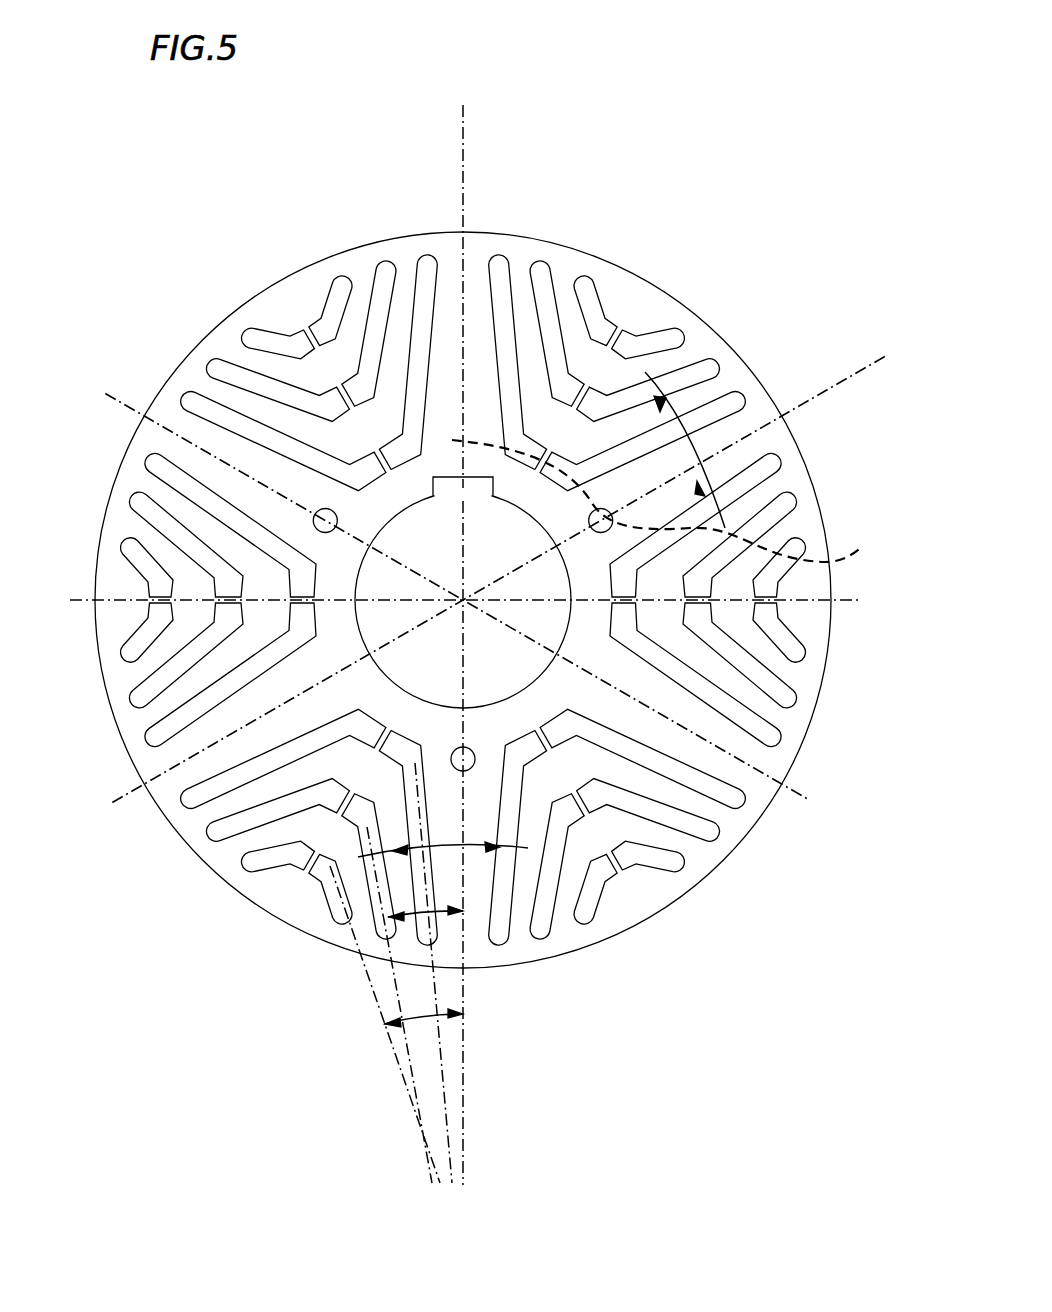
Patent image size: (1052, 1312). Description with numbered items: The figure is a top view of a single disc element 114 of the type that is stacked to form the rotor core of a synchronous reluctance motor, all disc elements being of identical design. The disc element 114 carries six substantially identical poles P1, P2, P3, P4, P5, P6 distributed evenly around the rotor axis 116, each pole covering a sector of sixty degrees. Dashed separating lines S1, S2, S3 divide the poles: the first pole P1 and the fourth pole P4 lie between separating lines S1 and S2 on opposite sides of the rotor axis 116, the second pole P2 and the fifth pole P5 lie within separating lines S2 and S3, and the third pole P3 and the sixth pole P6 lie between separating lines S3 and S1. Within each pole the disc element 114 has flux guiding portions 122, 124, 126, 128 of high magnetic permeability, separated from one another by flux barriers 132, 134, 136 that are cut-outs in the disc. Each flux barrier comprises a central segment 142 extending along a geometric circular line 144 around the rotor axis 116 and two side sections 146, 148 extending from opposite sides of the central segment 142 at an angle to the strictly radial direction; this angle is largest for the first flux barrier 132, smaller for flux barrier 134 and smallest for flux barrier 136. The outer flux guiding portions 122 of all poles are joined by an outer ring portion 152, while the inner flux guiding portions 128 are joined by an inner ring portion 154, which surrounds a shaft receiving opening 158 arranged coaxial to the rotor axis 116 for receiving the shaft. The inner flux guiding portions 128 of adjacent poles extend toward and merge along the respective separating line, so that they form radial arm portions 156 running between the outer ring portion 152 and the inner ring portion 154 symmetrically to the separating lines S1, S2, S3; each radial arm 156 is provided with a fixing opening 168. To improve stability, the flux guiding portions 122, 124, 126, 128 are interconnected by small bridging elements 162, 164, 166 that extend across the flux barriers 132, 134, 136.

The disc element 114 is at (800, 421).
The rotor axis 116 is at (463, 600).
The outer flux guiding portion 122 is at (625, 303).
The flux guiding portion 124 is at (587, 367).
The flux guiding portion 126 is at (498, 443).
The inner flux guiding portion 128 is at (527, 483).
The first flux barrier 132 is at (653, 333).
The flux barrier 134 is at (667, 387).
The flux barrier 136 is at (687, 423).
The central segment 142 is at (524, 455).
The geometric circular line 144 is at (850, 549).
The side section 146 is at (503, 408).
The side section 148 is at (740, 405).
The outer ring portion 152 is at (750, 815).
The inner ring portion 154 is at (377, 510).
The radial arm portion 156 is at (673, 710).
The shaft receiving opening 158 is at (410, 700).
The bridging element 162 is at (620, 863).
The bridging element 164 is at (580, 795).
The bridging element 166 is at (580, 725).
The fixing opening 168 is at (328, 517).
The separating line S1 is at (463, 132).
The separating line S2 is at (870, 356).
The separating line S3 is at (815, 800).
The first pole P1 is at (668, 270).
The second pole P2 is at (838, 497).
The third pole P3 is at (636, 952).
The fourth pole P4 is at (287, 950).
The fifth pole P5 is at (88, 497).
The sixth pole P6 is at (272, 252).